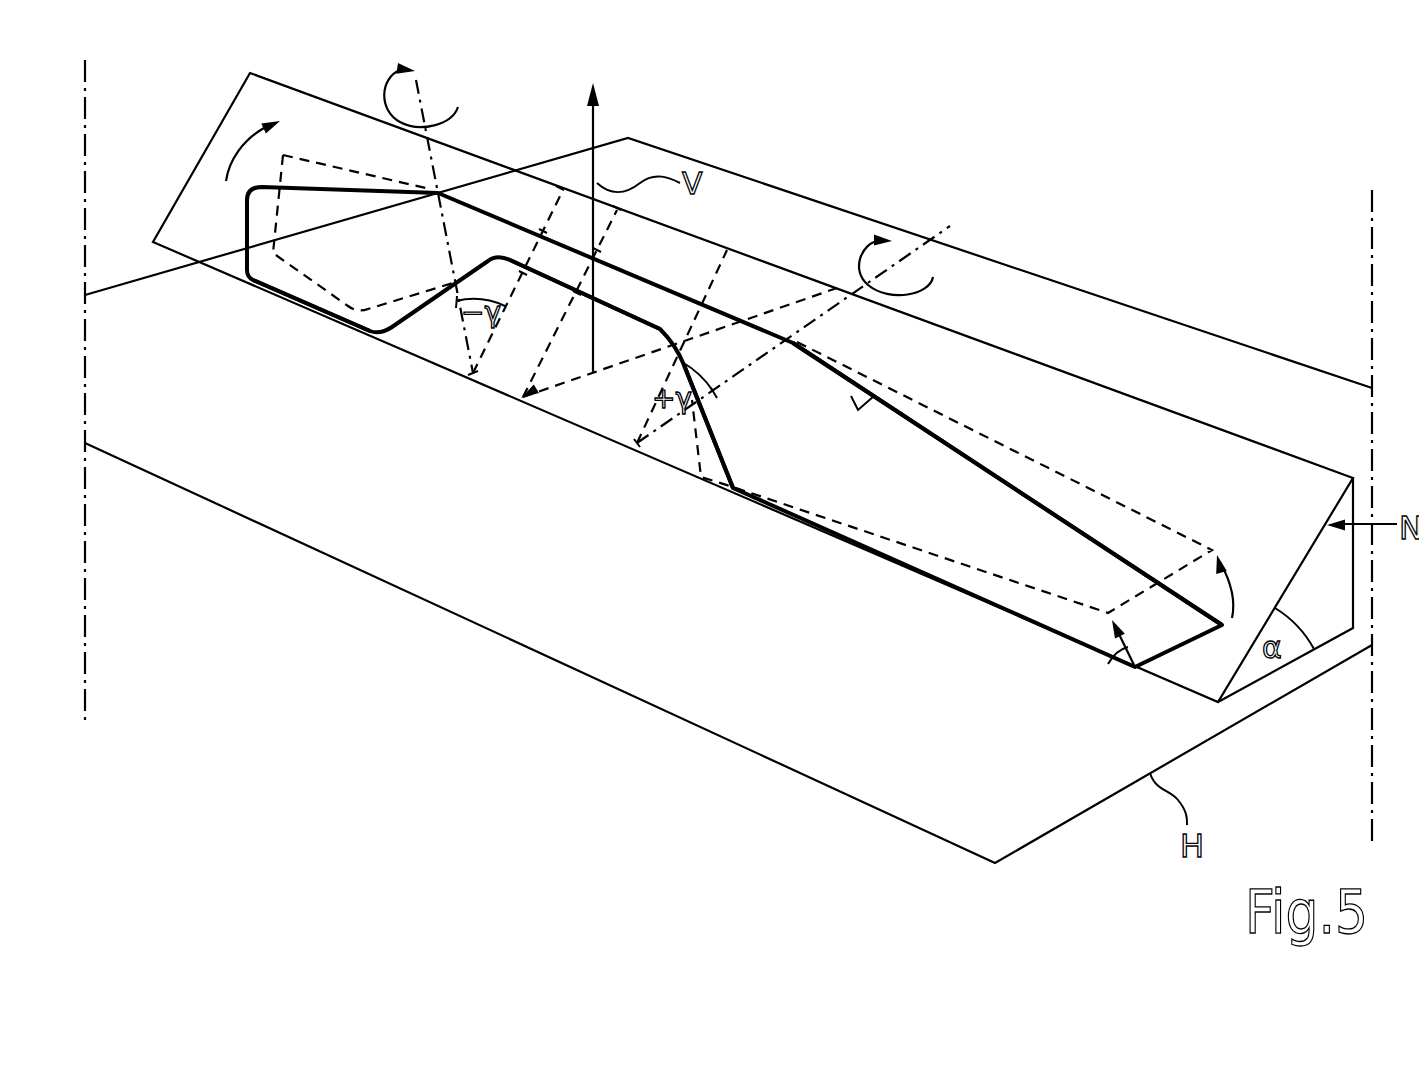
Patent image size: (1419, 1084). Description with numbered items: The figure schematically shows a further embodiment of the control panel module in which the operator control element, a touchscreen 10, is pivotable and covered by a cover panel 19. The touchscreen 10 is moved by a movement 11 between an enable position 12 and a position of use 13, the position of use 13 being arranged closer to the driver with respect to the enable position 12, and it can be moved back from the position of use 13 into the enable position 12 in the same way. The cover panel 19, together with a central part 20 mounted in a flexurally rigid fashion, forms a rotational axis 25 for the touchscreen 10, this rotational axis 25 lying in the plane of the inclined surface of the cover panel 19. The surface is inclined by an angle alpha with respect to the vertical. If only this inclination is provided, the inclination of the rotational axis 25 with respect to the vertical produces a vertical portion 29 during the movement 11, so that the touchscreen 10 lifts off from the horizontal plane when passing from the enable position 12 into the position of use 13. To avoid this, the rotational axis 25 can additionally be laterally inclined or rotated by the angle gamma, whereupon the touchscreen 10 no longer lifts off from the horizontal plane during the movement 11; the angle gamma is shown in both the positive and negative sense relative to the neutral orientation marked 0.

The zero position 0 is at (863, 397).
The touchscreen 10 is at (968, 486).
The movement 11 is at (237, 157).
The enable position 12 is at (271, 291).
The position of use 13 is at (339, 167).
The cover panel 19 is at (731, 331).
The central part 20 is at (633, 297).
The rotational axis 25 is at (433, 167).
The vertical portion 29 is at (1127, 645).